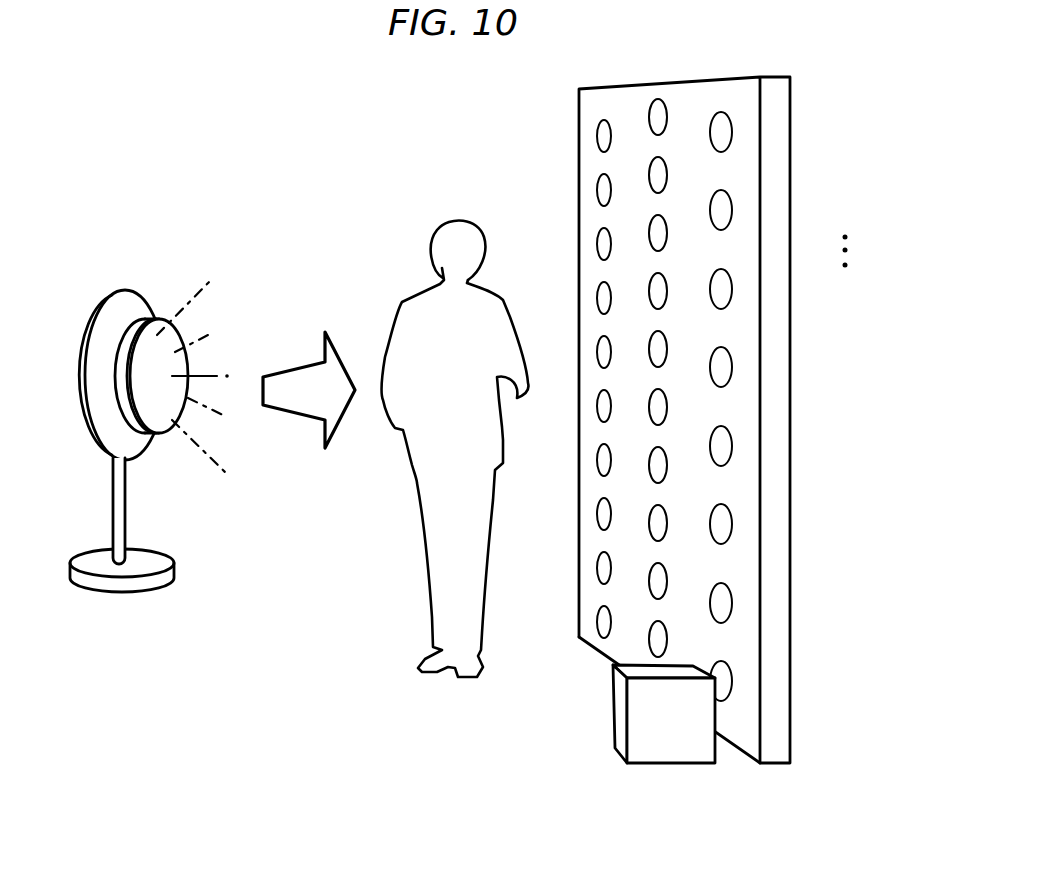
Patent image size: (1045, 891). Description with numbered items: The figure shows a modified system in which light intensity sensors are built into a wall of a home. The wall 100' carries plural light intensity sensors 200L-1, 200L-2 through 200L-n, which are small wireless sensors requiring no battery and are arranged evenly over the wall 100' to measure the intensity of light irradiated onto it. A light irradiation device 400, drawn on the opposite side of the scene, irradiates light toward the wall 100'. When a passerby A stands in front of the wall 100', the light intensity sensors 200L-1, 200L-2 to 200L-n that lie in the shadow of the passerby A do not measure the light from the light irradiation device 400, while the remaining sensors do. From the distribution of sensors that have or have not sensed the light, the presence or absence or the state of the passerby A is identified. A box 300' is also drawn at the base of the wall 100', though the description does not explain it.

The wall 100' is at (684, 386).
The light intensity sensor 200L-1 is at (727, 133).
The light intensity sensor 200L-2 is at (727, 205).
The light intensity sensor 200L-n is at (603, 627).
The control unit 300' is at (613, 714).
The light irradiation device 400 is at (130, 290).
The passerby A is at (462, 235).